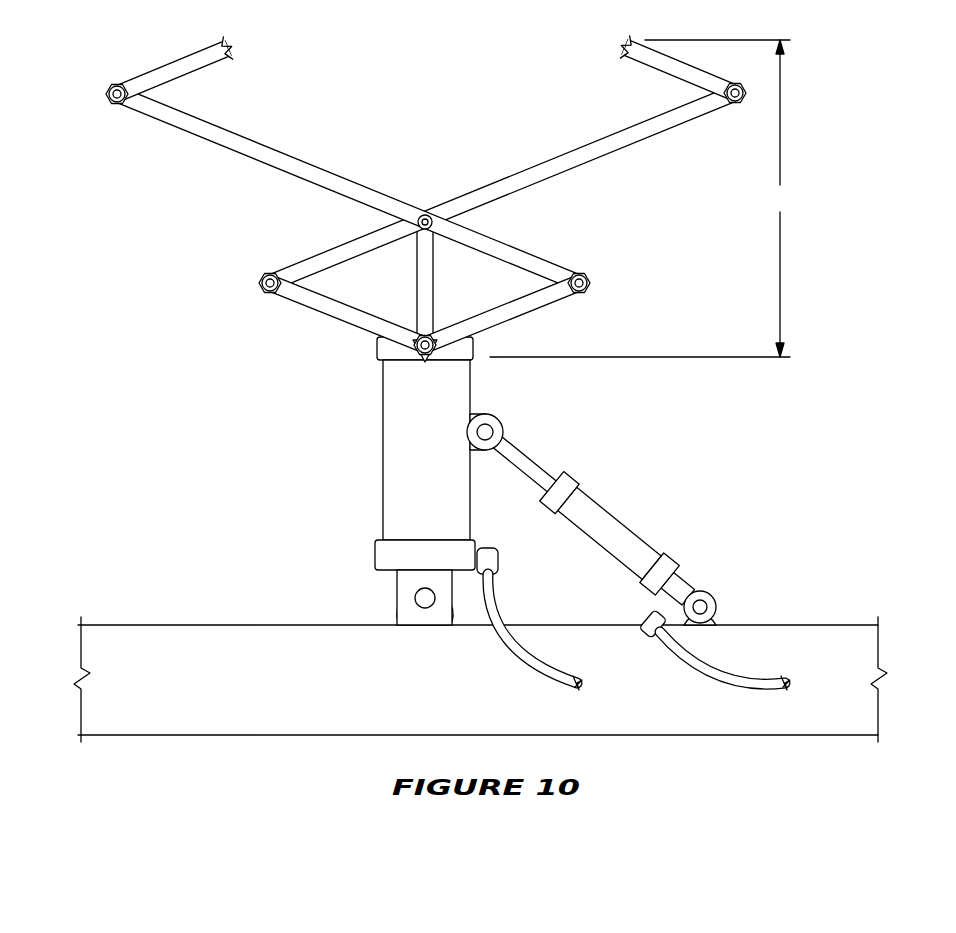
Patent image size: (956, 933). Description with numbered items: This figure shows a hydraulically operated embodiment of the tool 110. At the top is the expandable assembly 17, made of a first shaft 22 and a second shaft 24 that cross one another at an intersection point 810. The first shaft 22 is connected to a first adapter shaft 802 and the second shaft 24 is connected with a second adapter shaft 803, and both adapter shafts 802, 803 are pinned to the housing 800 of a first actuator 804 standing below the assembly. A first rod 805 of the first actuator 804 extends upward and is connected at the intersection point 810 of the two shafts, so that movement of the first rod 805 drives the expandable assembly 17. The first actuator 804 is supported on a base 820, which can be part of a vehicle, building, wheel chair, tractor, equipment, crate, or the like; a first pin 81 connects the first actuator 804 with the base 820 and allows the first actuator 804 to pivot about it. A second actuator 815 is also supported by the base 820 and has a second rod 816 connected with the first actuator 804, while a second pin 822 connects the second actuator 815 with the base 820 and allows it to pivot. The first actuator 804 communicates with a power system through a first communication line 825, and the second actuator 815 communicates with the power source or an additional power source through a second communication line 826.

The tool 110 is at (92, 52).
The expandable assembly 17 is at (644, 198).
The first shaft 22 is at (515, 245).
The second shaft 24 is at (337, 244).
The intersection point 810 is at (425, 213).
The first rod 805 is at (416, 297).
The second adapter shaft 803 is at (333, 320).
The first adapter shaft 802 is at (490, 318).
The housing 800 is at (373, 352).
The first actuator 804 is at (347, 450).
The first pin 81 is at (412, 598).
The second rod 816 is at (515, 450).
The second actuator 815 is at (652, 478).
The second pin 822 is at (722, 604).
The base 820 is at (232, 625).
The first communication line 825 is at (527, 668).
The second communication line 826 is at (708, 668).